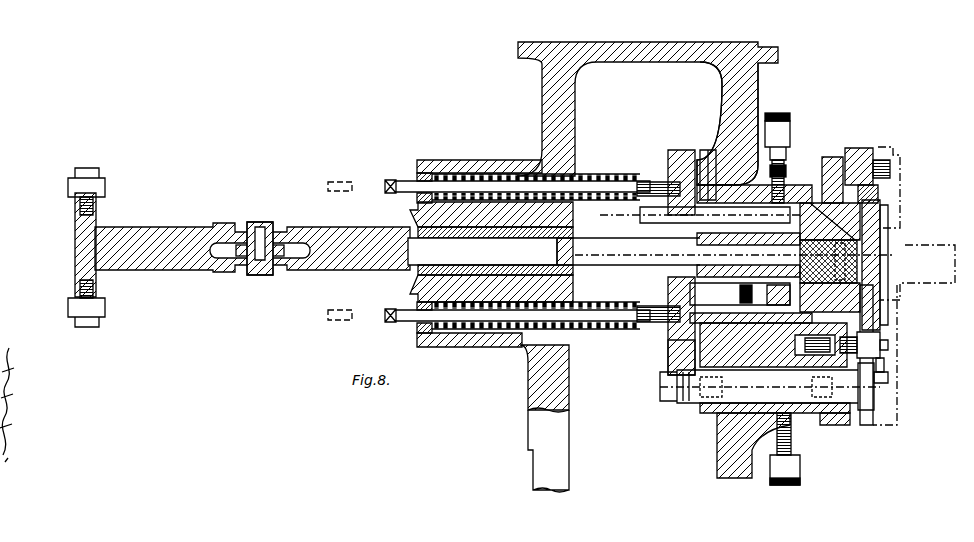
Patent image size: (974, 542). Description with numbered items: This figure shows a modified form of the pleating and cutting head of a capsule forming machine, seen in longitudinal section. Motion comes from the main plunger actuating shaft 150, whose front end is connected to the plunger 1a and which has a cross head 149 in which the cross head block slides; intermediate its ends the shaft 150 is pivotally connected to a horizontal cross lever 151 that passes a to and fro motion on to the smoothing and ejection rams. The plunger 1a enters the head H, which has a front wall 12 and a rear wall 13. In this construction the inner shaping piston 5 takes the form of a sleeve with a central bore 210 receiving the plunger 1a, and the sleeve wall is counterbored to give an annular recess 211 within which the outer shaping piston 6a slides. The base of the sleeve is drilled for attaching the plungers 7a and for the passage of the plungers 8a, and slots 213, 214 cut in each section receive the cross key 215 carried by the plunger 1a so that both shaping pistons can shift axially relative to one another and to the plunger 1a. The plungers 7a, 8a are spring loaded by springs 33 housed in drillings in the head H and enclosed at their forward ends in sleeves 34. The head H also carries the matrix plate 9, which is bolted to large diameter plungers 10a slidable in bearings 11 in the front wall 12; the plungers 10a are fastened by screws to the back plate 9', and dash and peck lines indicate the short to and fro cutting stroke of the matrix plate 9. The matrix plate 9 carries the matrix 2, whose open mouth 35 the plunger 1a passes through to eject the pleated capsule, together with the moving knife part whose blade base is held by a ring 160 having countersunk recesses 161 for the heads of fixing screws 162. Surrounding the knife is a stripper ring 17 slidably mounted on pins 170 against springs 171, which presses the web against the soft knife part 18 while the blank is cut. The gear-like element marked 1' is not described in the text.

The cross head 149 is at (104, 215).
The main plunger actuating shaft 150 is at (185, 226).
The horizontal cross lever 151 is at (287, 238).
The rear wall 13 is at (579, 95).
The front wall 12 is at (722, 95).
The sleeves 34 is at (614, 172).
The springs 33 is at (432, 176).
The plungers 7a is at (668, 298).
The back plate 9' is at (663, 357).
The slot 214 is at (712, 182).
The annular recess 211 is at (772, 215).
The soft part of the knife 18 is at (828, 158).
The matrix plate 9 is at (867, 149).
The outer shaping piston 6a is at (880, 211).
The inner shaping piston 5 is at (820, 232).
The gear 1' is at (815, 261).
The plunger 1a is at (800, 258).
The matrix 2 is at (880, 282).
The slot 213 is at (842, 247).
The open mouth of the matrix 35 is at (888, 302).
The plungers 8a is at (690, 212).
The central bore 210 is at (740, 248).
The cross key 215 is at (742, 263).
The bearings 11 is at (810, 425).
The fixing screws 162 is at (884, 347).
The pins 170 is at (886, 320).
The springs 171 is at (888, 340).
The countersunk recesses 161 is at (884, 362).
The ring 160 is at (880, 375).
The stripper ring 17 is at (810, 378).
The plungers 10a is at (702, 408).
The head H is at (718, 441).